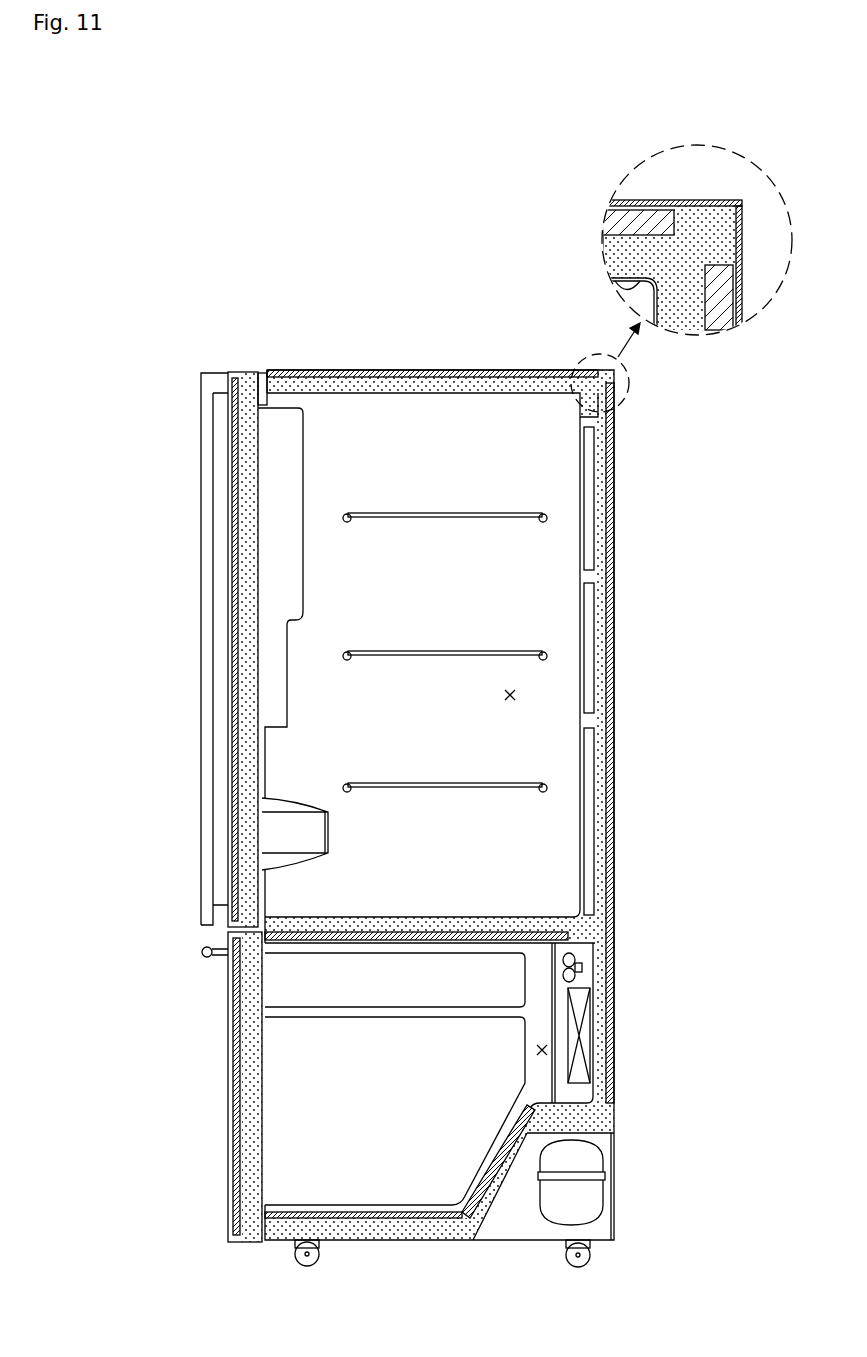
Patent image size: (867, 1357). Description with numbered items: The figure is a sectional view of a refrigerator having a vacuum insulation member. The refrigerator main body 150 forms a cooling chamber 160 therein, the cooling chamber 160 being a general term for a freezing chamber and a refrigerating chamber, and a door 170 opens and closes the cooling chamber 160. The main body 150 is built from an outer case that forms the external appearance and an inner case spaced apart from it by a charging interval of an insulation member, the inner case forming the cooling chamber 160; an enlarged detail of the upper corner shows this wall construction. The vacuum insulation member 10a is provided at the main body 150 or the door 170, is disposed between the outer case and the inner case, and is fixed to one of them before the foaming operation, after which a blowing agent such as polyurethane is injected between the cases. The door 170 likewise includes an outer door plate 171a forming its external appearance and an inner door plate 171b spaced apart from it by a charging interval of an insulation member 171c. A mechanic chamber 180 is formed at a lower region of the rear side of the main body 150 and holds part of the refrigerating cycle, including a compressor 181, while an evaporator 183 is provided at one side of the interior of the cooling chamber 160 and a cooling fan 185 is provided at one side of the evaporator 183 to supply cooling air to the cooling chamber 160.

The vacuum insulation member 10a is at (427, 370).
The refrigerator main body 150 is at (669, 233).
The cooling chamber 160 is at (515, 693).
The door 170 is at (149, 807).
The outer door plate 171a is at (230, 1092).
The inner door plate 171b is at (260, 1165).
The insulation member 171c is at (245, 1145).
The mechanic chamber 180 is at (602, 1152).
The compressor 181 is at (590, 1193).
The evaporator 183 is at (590, 1012).
The cooling fan 185 is at (582, 967).